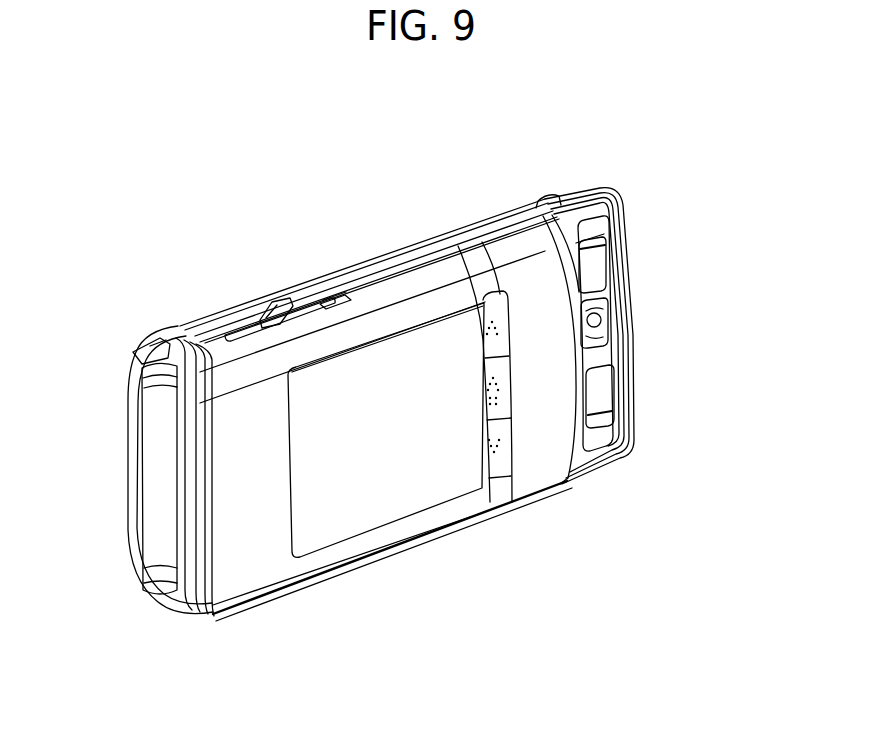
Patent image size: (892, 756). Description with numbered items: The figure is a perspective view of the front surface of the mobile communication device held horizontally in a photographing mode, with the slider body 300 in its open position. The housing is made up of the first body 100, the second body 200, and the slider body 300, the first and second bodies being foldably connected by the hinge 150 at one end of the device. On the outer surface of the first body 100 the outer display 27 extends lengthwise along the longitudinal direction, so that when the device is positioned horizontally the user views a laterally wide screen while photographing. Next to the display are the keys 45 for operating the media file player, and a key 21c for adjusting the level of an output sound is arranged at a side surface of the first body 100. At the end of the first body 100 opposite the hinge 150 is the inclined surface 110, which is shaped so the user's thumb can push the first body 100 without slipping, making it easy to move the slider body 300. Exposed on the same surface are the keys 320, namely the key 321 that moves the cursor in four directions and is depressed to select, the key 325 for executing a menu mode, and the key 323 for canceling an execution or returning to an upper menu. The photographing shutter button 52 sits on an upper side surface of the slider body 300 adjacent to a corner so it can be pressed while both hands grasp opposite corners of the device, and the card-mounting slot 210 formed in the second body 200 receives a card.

The first body 100 is at (272, 572).
The inclined surface 110 is at (598, 455).
The hinge 150 is at (152, 477).
The second body 200 is at (162, 334).
The card-mounting slot 210 is at (247, 318).
The key 21c is at (334, 297).
The outer display 27 is at (400, 497).
The keys 45 is at (507, 479).
The photographing shutter button 52 is at (552, 197).
The slider body 300 is at (621, 192).
The keys 320 is at (742, 252).
The key 321 is at (606, 329).
The key 323 is at (598, 393).
The key 325 is at (598, 265).